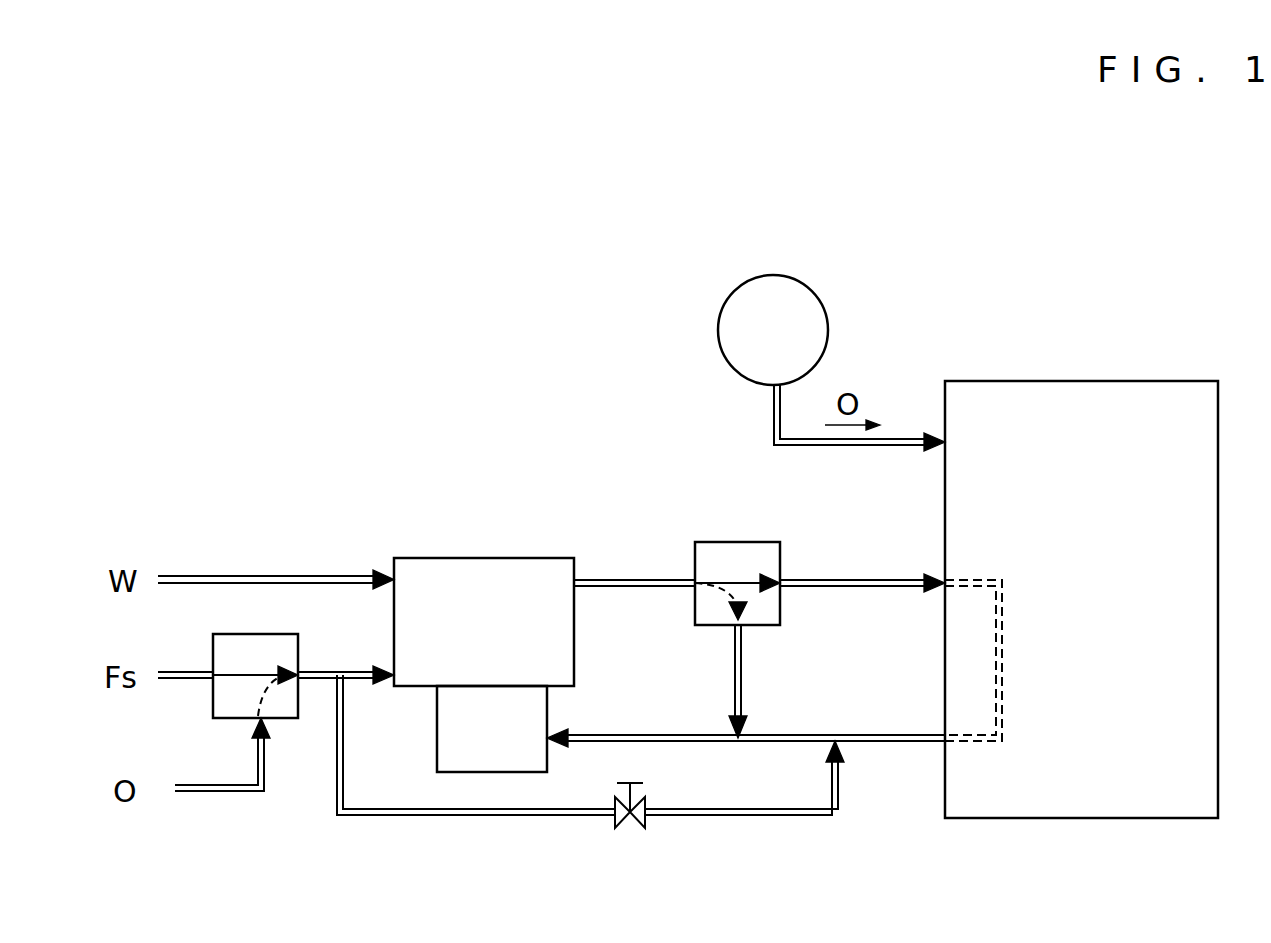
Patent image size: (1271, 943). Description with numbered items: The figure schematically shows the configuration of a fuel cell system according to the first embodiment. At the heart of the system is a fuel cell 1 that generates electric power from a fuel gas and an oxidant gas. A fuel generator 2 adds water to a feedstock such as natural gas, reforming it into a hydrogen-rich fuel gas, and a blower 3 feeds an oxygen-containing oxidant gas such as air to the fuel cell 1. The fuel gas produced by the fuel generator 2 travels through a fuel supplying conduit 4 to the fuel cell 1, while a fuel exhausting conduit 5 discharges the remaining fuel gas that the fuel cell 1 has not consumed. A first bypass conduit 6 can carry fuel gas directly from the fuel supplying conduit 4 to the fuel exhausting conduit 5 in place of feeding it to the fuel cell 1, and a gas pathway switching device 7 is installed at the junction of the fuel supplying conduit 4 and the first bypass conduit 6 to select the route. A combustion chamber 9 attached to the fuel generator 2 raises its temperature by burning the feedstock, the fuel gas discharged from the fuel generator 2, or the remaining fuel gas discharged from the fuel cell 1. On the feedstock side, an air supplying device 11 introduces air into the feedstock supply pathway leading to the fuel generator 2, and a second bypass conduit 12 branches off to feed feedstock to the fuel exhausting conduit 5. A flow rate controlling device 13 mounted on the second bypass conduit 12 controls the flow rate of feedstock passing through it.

The fuel cell 1 is at (1117, 395).
The fuel generator 2 is at (484, 622).
The blower 3 is at (773, 330).
The fuel supplying conduit 4 is at (800, 579).
The fuel exhausting conduit 5 is at (820, 735).
The first bypass conduit 6 is at (741, 683).
The gas pathway switching device 7 is at (738, 540).
The combustion chamber 9 is at (492, 729).
The air supplying device 11 is at (300, 631).
The second bypass conduit 12 is at (481, 816).
The flow rate controlling device 13 is at (640, 828).